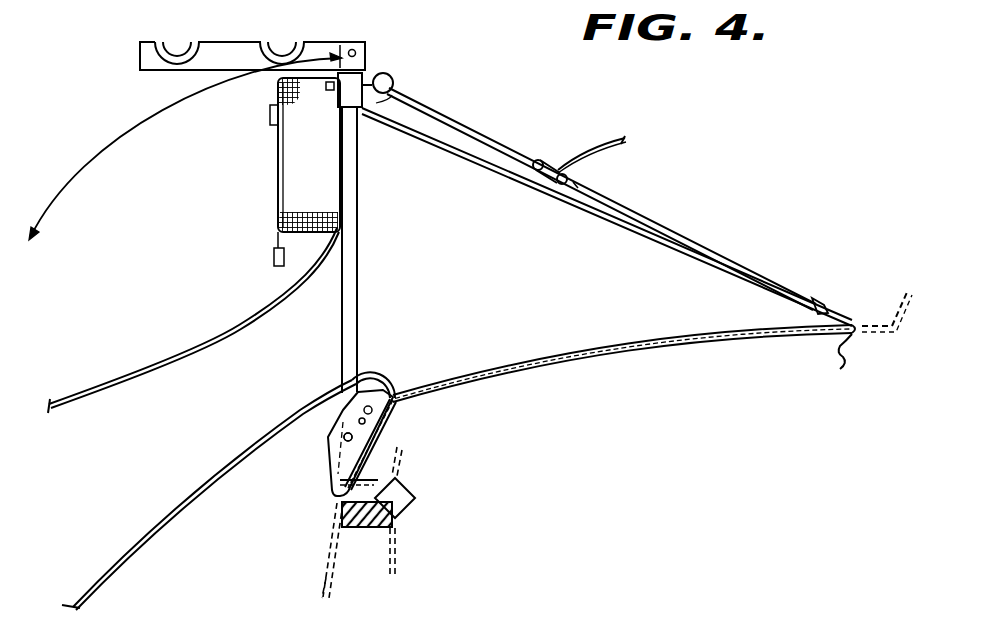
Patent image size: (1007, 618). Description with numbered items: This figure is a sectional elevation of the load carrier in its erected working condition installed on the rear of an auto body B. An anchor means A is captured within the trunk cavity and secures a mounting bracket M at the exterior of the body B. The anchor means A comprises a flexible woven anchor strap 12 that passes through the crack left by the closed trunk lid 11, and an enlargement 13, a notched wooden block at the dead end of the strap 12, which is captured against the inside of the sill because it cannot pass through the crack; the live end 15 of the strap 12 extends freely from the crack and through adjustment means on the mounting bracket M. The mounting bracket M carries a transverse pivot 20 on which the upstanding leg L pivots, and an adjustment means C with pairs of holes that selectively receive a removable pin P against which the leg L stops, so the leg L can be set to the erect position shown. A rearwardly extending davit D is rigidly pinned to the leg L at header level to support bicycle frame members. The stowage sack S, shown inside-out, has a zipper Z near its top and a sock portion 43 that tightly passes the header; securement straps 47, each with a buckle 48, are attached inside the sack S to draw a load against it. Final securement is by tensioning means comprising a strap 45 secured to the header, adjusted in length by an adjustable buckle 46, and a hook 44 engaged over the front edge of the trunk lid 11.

The davit D is at (167, 72).
The zipper Z is at (269, 118).
The stowage sack S is at (301, 176).
The buckle 48 is at (274, 255).
The securement strap 47 is at (212, 341).
The leg L is at (359, 294).
The removable pin P is at (395, 79).
The sock portion 43 is at (422, 94).
The strap 45 is at (490, 126).
The adjustable buckle 46 is at (560, 173).
The hook 44 is at (859, 363).
The trunk lid 11 is at (608, 345).
The live end 15 is at (165, 515).
The adjustment means C is at (378, 426).
The pivot 20 is at (344, 439).
The mounting bracket M is at (329, 483).
The anchor strap 12 is at (332, 499).
The enlargement 13 is at (398, 500).
The anchor means A is at (404, 510).
The auto body B is at (325, 570).